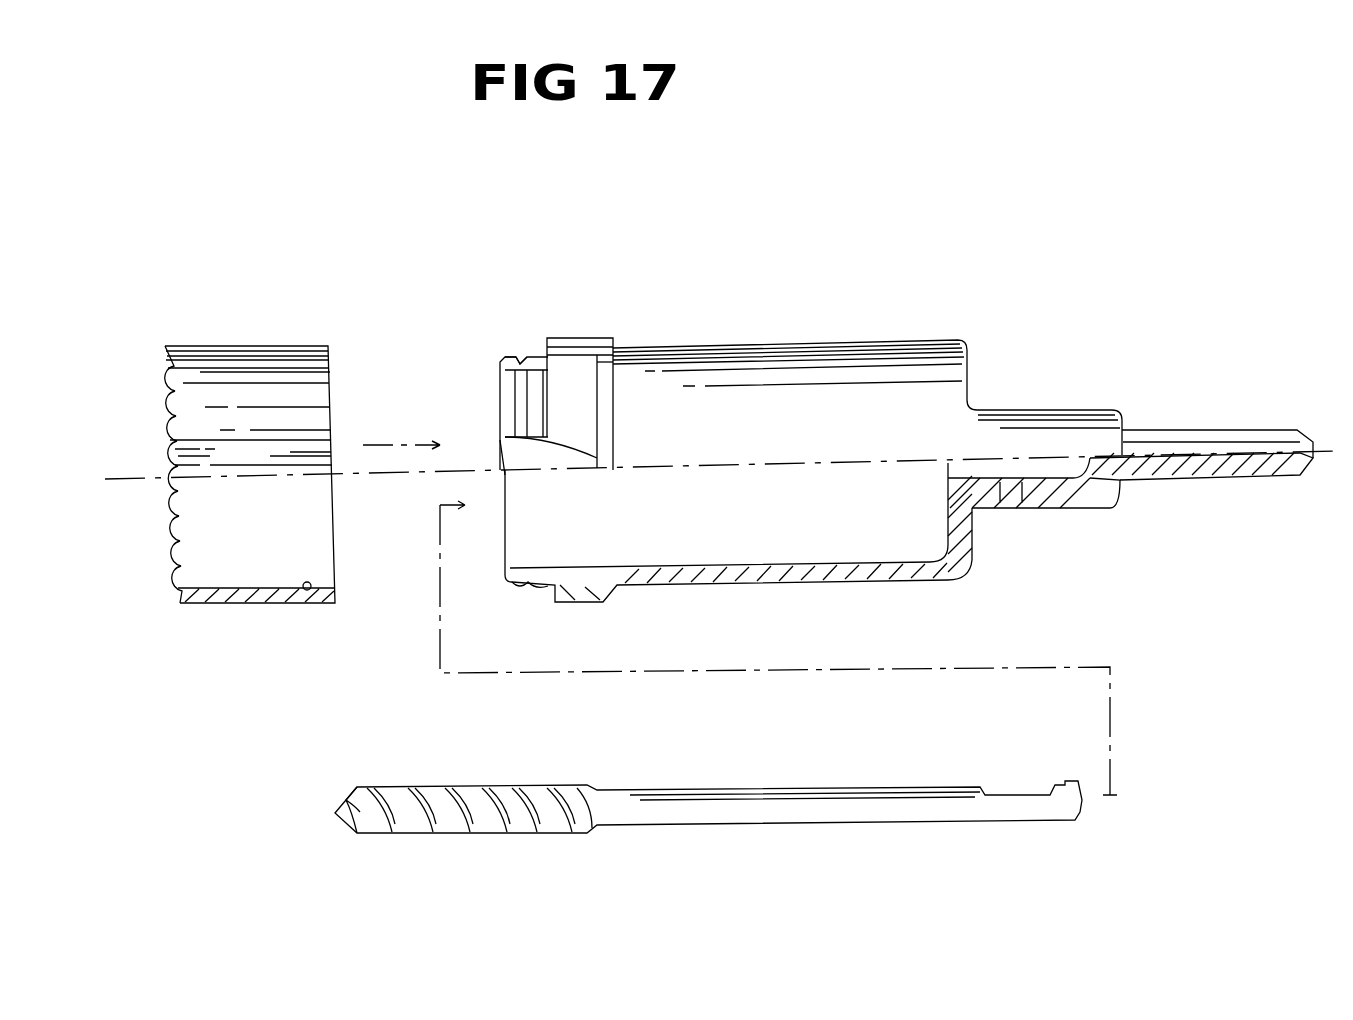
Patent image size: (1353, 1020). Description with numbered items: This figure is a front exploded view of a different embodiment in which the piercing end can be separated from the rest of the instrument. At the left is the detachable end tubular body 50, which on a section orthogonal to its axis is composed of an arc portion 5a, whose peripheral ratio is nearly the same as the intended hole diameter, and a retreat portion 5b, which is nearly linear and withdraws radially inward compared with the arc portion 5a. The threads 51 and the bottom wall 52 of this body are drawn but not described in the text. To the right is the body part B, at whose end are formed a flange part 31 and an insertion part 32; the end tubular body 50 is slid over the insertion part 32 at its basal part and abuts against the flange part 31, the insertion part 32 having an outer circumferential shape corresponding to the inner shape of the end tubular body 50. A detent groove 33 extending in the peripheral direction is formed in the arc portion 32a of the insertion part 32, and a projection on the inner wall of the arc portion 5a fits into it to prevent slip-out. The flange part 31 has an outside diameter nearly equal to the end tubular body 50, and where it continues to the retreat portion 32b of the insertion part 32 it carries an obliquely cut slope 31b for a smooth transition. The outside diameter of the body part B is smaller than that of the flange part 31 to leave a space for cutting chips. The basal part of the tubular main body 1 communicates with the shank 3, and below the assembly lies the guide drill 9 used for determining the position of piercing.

The arc portion 5a is at (290, 343).
The retreat portion 5b is at (277, 460).
The end tubular body 50 is at (195, 345).
The thread 51 is at (162, 367).
The nut bottom wall 52 is at (295, 600).
The body part B is at (770, 340).
The tubular main body 1 is at (1067, 410).
The shank 3 is at (1210, 425).
The insertion part 32 is at (535, 352).
The arc portion of insertion part 32a is at (500, 387).
The retreat portion of insertion part 32b is at (520, 463).
The detent groove 33 is at (517, 358).
The flange part 31 is at (577, 333).
The slope 31b is at (573, 458).
The guide drill 9 is at (788, 785).